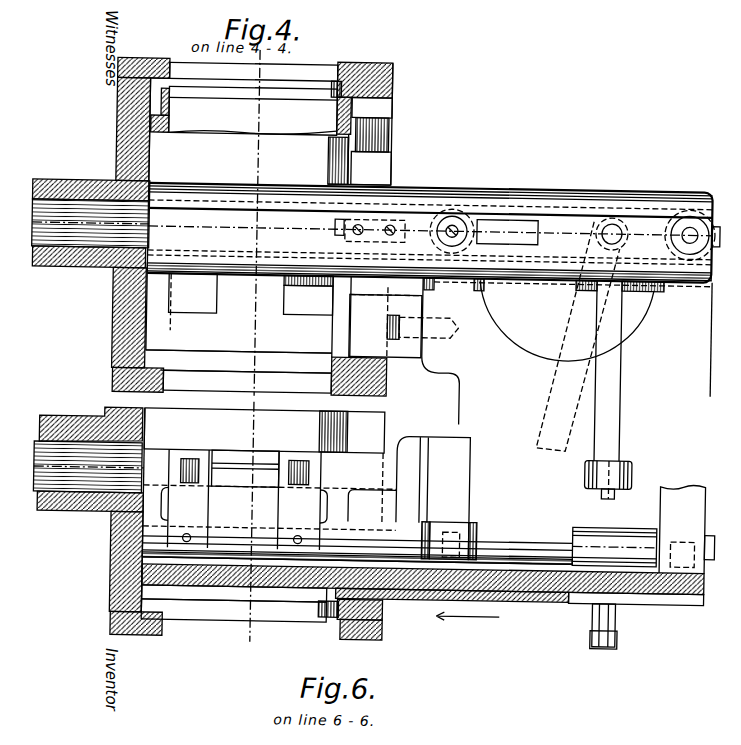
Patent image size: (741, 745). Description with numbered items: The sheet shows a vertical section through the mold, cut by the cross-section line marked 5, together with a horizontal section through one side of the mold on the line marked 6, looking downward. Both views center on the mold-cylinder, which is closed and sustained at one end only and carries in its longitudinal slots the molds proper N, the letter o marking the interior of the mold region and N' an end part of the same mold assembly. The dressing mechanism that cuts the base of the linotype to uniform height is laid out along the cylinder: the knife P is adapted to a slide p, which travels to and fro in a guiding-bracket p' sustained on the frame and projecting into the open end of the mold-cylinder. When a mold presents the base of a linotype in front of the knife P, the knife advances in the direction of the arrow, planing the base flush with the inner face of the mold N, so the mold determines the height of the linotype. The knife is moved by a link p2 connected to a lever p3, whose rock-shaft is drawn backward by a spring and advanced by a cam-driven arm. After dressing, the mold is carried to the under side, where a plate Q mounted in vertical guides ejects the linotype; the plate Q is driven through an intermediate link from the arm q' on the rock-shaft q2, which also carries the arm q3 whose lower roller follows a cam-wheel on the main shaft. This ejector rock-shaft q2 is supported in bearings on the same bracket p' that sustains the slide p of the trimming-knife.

In FIG. 4, the section line 6- 6 is at (28, 222).
In FIG. 4, the section line 5- 5 is at (257, 221).
In FIG. 6, the section line 5- 5 is at (248, 533).
In FIG. 4, the opening o is at (253, 118).
In FIG. 4, the mold proper N is at (250, 234).
In FIG. 6, the mold proper N is at (233, 625).
In FIG. 4, the end nut N' is at (724, 249).
In FIG. 4, the knife P is at (332, 224).
In FIG. 6, the knife P is at (333, 602).
In FIG. 6, the slide p is at (452, 615).
In FIG. 6, the guiding-bracket p' is at (596, 619).
In FIG. 4, the link p2 is at (507, 232).
In FIG. 6, the link p2 is at (566, 602).
In FIG. 4, the lever p3 is at (565, 338).
In FIG. 6, the lever p3 is at (614, 640).
In FIG. 4, the plate Q is at (246, 362).
In FIG. 6, the plate Q is at (233, 460).
In FIG. 6, the arm q' is at (244, 485).
In FIG. 6, the rock-shaft q2 is at (357, 538).
In FIG. 4, the arm q3 is at (623, 404).